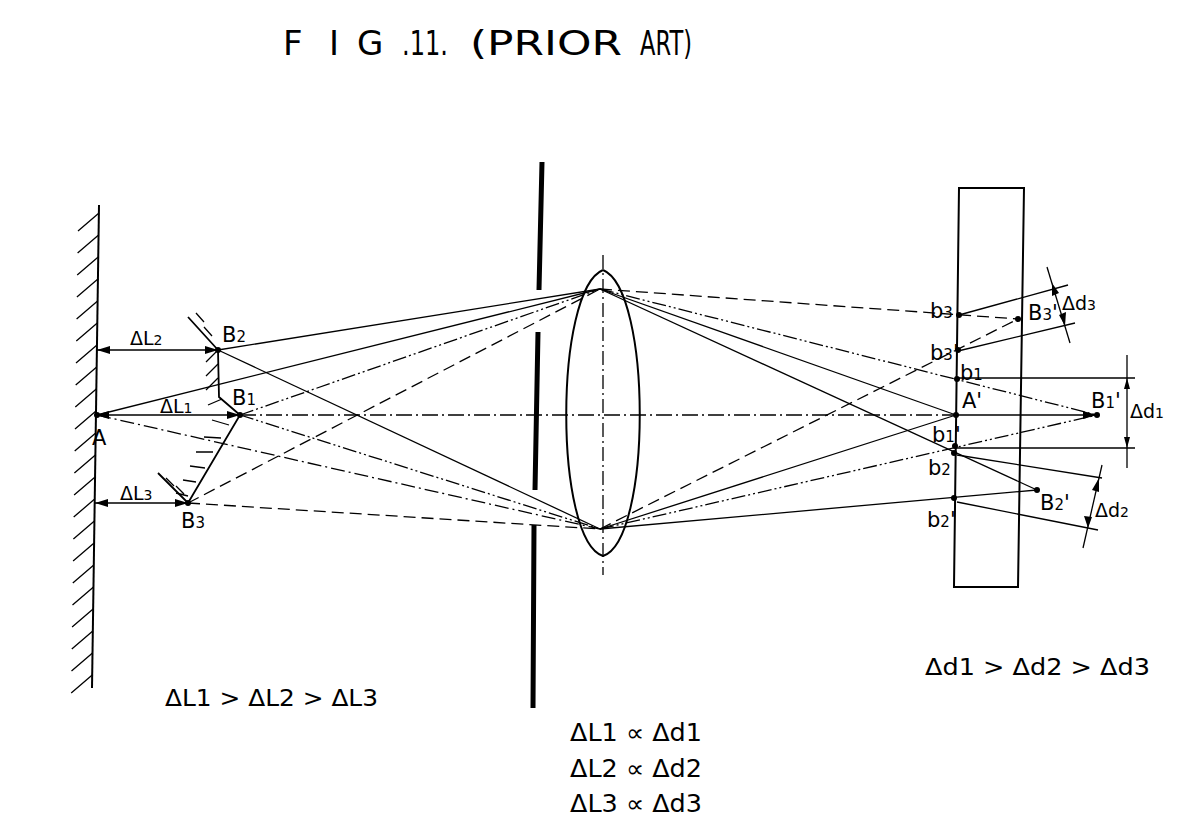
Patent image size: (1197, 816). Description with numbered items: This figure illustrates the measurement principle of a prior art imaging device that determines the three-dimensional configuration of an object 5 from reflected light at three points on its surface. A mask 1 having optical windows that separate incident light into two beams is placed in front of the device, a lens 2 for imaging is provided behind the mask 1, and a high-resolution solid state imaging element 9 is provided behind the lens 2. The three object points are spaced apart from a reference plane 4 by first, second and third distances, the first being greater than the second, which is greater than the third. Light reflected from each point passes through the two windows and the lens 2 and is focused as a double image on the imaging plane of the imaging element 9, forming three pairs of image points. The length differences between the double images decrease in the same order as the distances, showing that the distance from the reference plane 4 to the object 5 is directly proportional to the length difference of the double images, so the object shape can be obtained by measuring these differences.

The mask 1 is at (544, 162).
The lens 2 is at (612, 280).
The reference plane 4 is at (100, 228).
The object 5 is at (205, 320).
The solid state imaging element 9 is at (1008, 198).